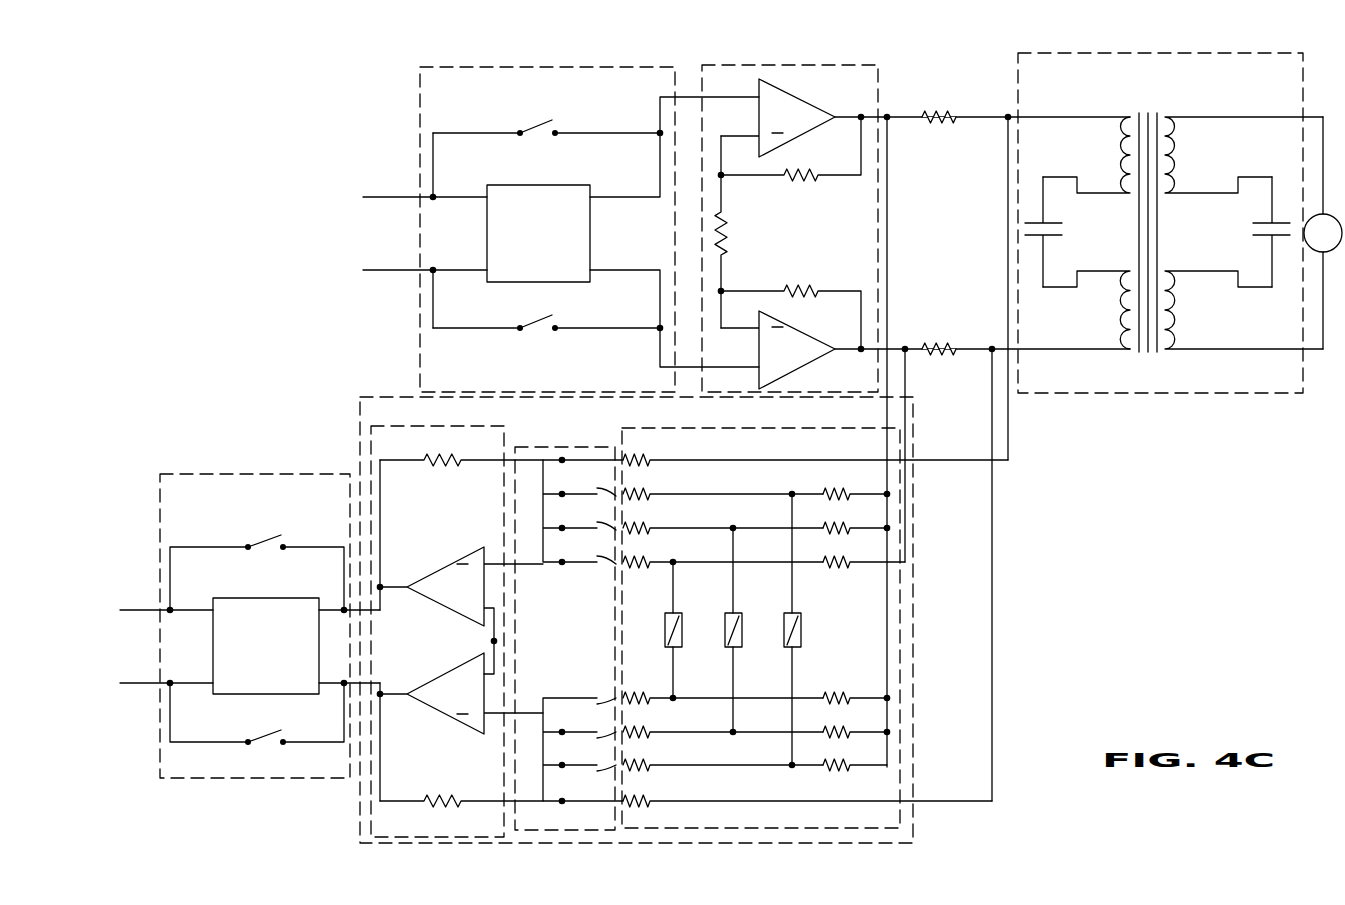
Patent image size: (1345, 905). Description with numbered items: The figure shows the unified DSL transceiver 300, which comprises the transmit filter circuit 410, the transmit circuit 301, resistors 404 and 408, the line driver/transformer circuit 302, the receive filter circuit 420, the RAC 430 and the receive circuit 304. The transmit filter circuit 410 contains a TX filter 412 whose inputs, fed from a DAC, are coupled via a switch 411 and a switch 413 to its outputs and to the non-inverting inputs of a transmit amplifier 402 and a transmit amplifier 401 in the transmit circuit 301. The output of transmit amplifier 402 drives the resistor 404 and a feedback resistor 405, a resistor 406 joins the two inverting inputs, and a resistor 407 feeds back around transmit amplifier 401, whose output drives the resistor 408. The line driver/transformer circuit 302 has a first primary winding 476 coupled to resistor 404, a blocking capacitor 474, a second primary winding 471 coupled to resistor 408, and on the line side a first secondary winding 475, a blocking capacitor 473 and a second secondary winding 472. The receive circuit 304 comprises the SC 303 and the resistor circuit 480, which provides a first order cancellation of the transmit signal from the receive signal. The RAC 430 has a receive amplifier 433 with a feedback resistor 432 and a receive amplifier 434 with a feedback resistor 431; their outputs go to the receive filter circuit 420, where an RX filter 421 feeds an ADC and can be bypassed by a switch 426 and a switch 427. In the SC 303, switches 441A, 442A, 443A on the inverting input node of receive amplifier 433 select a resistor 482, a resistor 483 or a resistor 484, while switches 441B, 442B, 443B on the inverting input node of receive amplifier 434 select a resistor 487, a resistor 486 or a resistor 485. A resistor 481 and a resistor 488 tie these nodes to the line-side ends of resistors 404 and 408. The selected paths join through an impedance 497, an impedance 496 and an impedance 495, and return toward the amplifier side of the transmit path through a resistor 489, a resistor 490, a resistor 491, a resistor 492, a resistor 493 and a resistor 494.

The unified DSL transceiver 300 is at (222, 223).
The transmit circuit 301 is at (745, 89).
The line driver/transformer circuit 302 is at (1296, 78).
The SC 303 is at (615, 827).
The receive circuit 304 is at (405, 421).
The transmit amplifier 401 is at (800, 357).
The transmit amplifier 402 is at (801, 124).
The resistor 404 is at (942, 100).
The resistor 405 is at (806, 194).
The resistor 406 is at (731, 232).
The resistor 407 is at (799, 271).
The resistor 408 is at (942, 335).
The transmit filter circuit 410 is at (465, 386).
The switch 411 is at (535, 113).
The TX filter 412 is at (590, 276).
The switch 413 is at (540, 345).
The receive filter circuit 420 is at (200, 773).
The RX filter 421 is at (310, 689).
The switch 426 is at (270, 526).
The switch 427 is at (260, 724).
The RAC 430 is at (413, 830).
The resistor 431 is at (442, 788).
The resistor 432 is at (447, 486).
The receive amplifier 433 is at (468, 599).
The receive amplifier 434 is at (477, 703).
The switch 441A is at (607, 498).
The switch 442A is at (607, 532).
The switch 443A is at (602, 568).
The switch 441B is at (600, 764).
The switch 442B is at (599, 729).
The switch 443B is at (603, 692).
The second primary winding 471 is at (1116, 301).
The second secondary winding 472 is at (1188, 305).
The blocking capacitor 473 is at (1246, 228).
The blocking capacitor 474 is at (1074, 228).
The first secondary winding 475 is at (1186, 143).
The first primary winding 476 is at (1116, 140).
The resistor circuit 480 is at (893, 824).
The resistor 481 is at (639, 452).
The resistor 482 is at (640, 487).
The resistor 483 is at (640, 521).
The resistor 484 is at (640, 555).
The resistor 485 is at (632, 685).
The resistor 486 is at (643, 723).
The resistor 487 is at (643, 757).
The resistor 488 is at (643, 792).
The resistor 489 is at (837, 484).
The resistor 490 is at (831, 519).
The resistor 491 is at (838, 577).
The resistor 492 is at (832, 681).
The resistor 493 is at (835, 718).
The resistor 494 is at (834, 779).
The impedance 495 is at (692, 633).
The impedance 496 is at (748, 633).
The impedance 497 is at (806, 630).